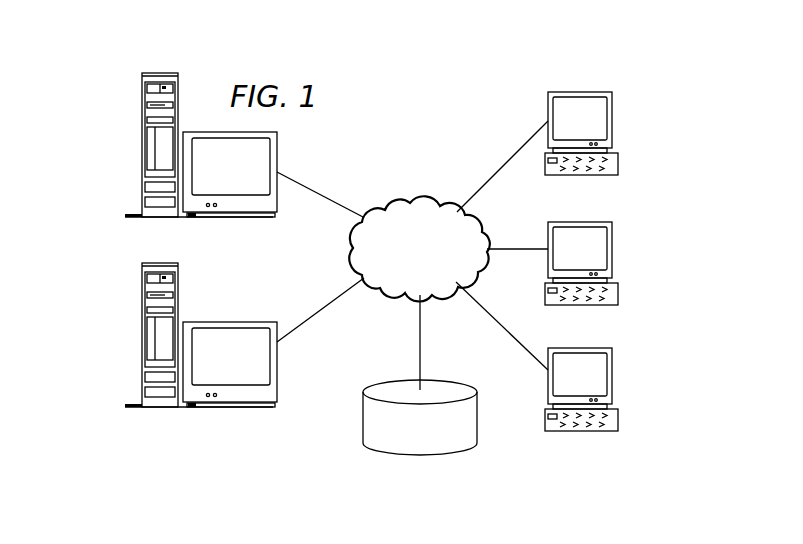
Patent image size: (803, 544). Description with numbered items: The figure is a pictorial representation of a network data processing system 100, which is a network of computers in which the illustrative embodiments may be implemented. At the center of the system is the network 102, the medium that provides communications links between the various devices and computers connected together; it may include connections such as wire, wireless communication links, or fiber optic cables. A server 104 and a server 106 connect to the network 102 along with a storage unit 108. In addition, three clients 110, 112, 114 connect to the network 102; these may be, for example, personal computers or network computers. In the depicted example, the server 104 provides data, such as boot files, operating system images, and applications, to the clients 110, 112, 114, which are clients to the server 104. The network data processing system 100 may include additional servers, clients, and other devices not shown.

The network data processing system 100 is at (470, 99).
The network 102 is at (393, 205).
The server 104 is at (140, 145).
The server 106 is at (140, 337).
The storage unit 108 is at (403, 458).
The client 110 is at (612, 118).
The client 112 is at (612, 256).
The client 114 is at (612, 378).